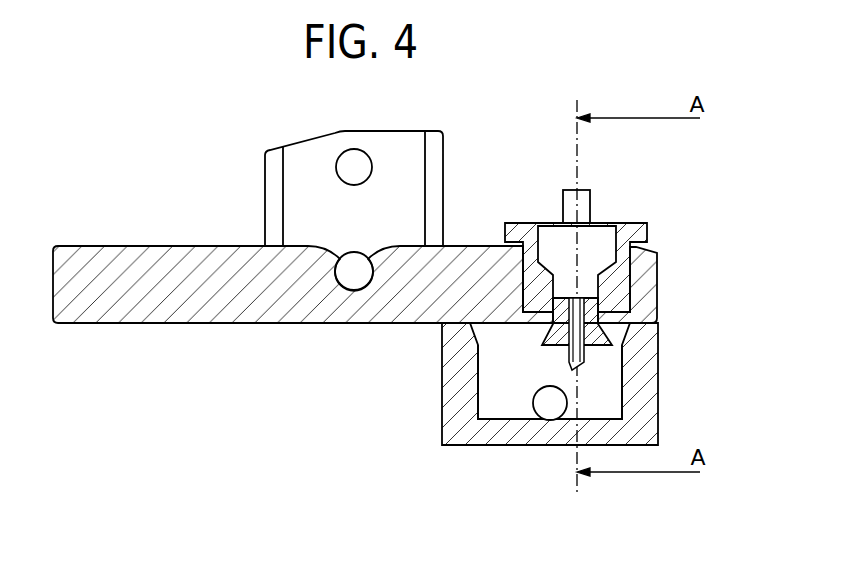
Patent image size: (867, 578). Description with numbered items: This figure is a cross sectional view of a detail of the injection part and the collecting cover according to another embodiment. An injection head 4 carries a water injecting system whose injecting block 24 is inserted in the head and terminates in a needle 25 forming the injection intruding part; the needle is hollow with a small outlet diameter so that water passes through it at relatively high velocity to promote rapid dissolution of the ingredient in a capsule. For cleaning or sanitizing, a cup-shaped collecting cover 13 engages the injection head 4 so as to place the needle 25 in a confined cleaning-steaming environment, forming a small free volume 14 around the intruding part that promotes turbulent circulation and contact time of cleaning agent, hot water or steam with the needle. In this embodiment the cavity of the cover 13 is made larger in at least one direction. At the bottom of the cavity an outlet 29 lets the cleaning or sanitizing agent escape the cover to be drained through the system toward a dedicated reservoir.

The injection head 4 is at (153, 232).
The injecting block 24 is at (648, 232).
The needle 25 is at (587, 353).
The collecting cover 13 is at (641, 397).
The free volume 14 is at (498, 375).
The outlet 29 is at (545, 408).